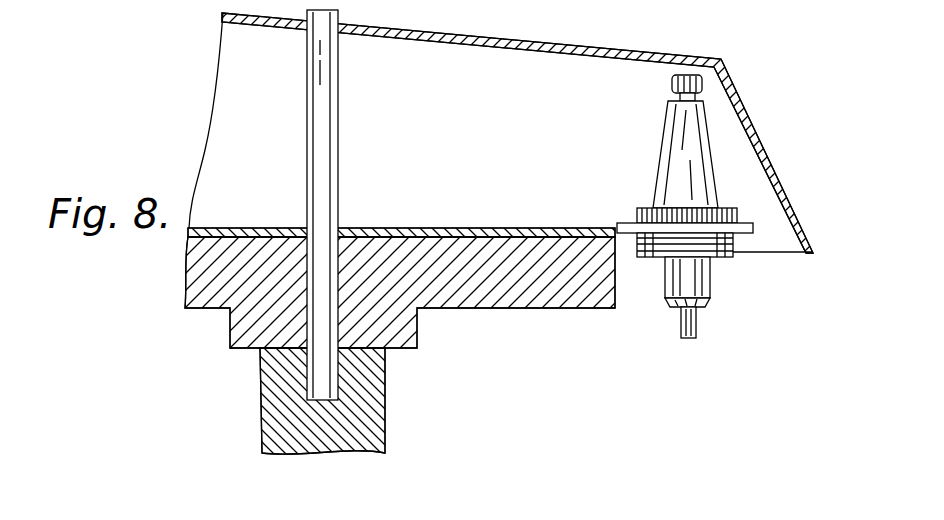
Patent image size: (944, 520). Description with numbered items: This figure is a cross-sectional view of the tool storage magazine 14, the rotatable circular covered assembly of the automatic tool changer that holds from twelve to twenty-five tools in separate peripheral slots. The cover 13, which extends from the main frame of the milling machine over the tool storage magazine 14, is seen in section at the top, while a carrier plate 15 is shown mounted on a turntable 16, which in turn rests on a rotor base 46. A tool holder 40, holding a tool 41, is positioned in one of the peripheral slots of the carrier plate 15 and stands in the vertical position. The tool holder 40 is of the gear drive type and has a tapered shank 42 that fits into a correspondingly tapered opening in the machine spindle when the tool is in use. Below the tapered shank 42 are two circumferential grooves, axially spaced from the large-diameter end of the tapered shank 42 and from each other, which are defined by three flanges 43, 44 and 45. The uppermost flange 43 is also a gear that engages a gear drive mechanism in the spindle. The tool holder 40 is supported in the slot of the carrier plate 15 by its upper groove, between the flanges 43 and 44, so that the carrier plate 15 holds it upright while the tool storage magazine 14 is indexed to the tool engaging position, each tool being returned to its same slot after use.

The cover 13 is at (513, 43).
The tool storage magazine 14 is at (757, 368).
The carrier plate 15 is at (623, 224).
The turntable 16 is at (553, 308).
The tool holder 40 is at (662, 300).
The tool 41 is at (680, 330).
The tapered shank 42 is at (681, 123).
The uppermost flange 43 is at (638, 212).
The flange 44 is at (734, 238).
The flange 45 is at (734, 254).
The rotor base 46 is at (370, 412).